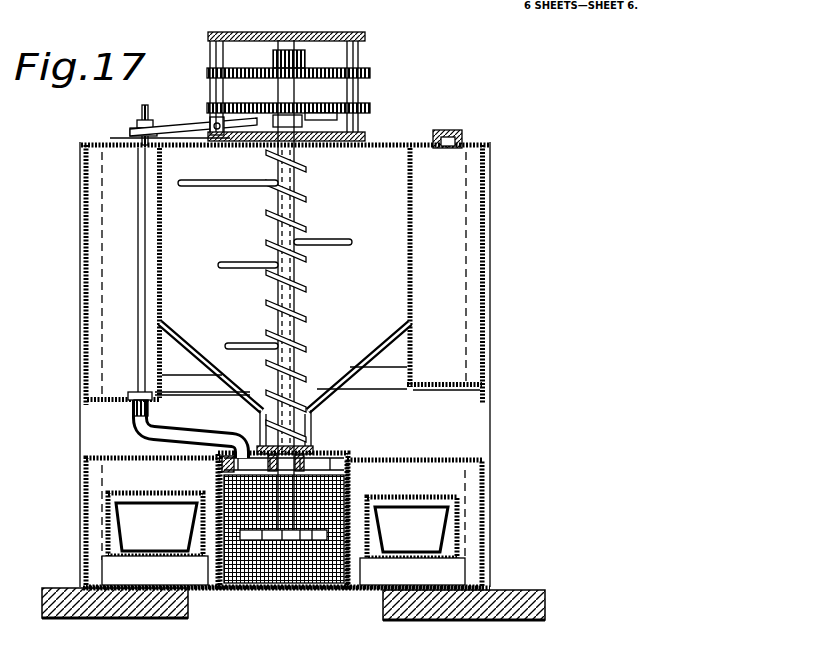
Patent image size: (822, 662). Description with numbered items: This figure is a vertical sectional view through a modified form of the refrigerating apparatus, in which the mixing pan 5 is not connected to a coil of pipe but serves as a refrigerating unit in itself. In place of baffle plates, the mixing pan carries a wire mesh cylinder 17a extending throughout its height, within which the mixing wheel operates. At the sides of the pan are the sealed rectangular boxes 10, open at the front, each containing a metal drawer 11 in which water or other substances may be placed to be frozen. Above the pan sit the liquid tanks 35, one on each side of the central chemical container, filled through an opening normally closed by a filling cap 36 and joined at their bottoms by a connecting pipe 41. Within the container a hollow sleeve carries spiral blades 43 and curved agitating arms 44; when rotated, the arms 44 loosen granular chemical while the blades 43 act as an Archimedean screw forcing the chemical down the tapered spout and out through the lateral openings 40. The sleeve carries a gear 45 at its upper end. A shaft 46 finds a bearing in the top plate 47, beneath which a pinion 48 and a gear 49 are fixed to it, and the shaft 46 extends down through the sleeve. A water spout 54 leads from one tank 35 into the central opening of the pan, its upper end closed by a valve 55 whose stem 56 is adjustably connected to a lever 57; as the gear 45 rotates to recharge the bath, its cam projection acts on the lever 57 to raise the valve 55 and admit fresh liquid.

The mixing pan 5 is at (480, 490).
The boxes 10 is at (108, 520).
The drawers 11 is at (125, 523).
The wire mesh cylinder 17a is at (252, 592).
The liquid tanks 35 is at (80, 298).
The filling cap 36 is at (460, 130).
The lateral openings 40 is at (266, 432).
The connecting pipe 41 is at (390, 380).
The spiral blades 43 is at (300, 196).
The agitating arms 44 is at (237, 262).
The gear 45 is at (370, 107).
The shaft 46 is at (283, 90).
The top plate 47 is at (355, 35).
The pinion 48 is at (306, 58).
The gear 49 is at (370, 72).
The water spout 54 is at (155, 437).
The valve 55 is at (90, 394).
The stem 56 is at (140, 212).
The lever 57 is at (168, 128).